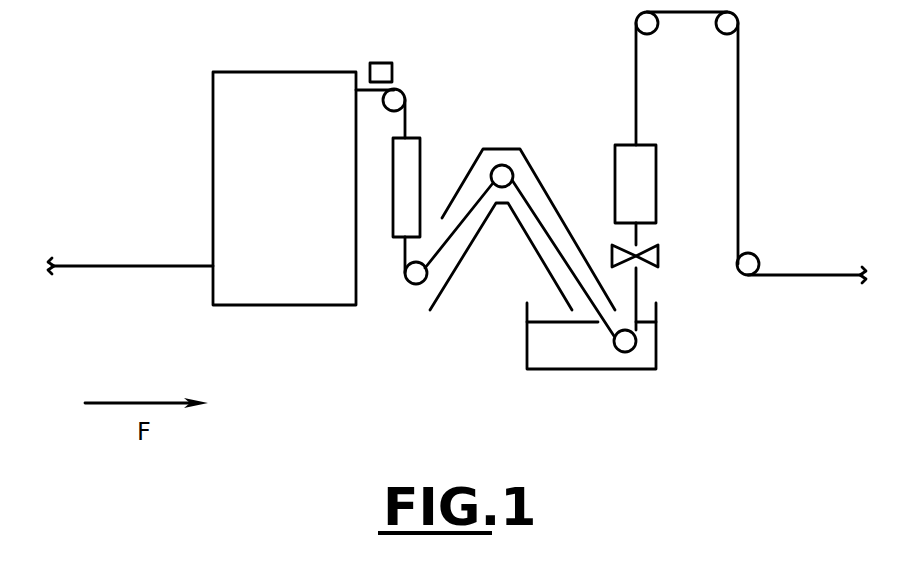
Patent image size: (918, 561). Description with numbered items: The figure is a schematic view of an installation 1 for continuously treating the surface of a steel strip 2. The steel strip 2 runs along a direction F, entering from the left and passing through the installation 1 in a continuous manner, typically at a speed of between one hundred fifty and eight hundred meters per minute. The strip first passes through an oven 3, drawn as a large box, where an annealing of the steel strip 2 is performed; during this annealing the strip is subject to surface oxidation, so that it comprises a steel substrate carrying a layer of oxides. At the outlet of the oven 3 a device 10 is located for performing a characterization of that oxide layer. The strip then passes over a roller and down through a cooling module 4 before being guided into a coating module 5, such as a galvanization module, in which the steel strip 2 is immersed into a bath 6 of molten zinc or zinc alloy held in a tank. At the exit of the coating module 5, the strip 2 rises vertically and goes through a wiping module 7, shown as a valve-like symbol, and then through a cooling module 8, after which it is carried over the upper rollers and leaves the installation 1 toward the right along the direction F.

The installation 1 is at (150, 50).
The steel strip 2 is at (98, 267).
The oven 3 is at (282, 72).
The cooling module 4 is at (420, 157).
The coating module 5 is at (485, 285).
The bath 6 is at (547, 370).
The wiping module 7 is at (658, 254).
The cooling module 8 is at (656, 180).
The device 10 is at (392, 72).